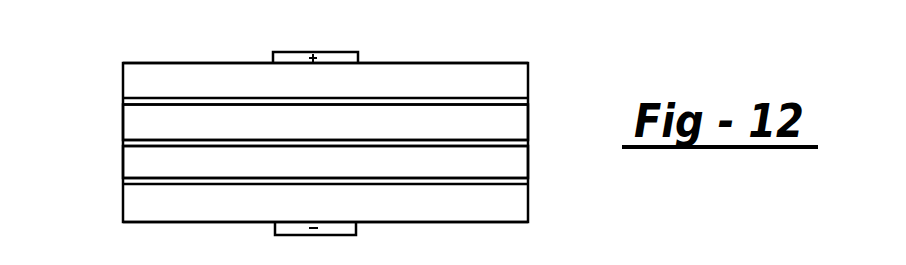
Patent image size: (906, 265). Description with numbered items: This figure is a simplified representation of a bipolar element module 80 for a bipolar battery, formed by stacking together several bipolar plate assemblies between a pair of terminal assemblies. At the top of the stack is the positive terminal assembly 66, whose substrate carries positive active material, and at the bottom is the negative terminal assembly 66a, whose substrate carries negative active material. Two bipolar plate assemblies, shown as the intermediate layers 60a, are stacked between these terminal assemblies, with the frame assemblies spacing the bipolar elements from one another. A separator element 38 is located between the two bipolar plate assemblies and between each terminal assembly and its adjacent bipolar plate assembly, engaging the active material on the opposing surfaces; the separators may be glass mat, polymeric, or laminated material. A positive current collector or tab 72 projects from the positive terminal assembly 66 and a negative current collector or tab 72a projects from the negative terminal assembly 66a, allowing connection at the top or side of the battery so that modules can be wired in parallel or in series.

The bipolar element module 80 is at (310, 163).
The positive terminal assembly 66 is at (134, 80).
The negative terminal assembly 66a is at (146, 199).
The intermediate layer 60a is at (137, 161).
The separator element 38 is at (528, 178).
The positive current collector or tab 72 is at (348, 52).
The negative current collector or tab 72a is at (275, 228).